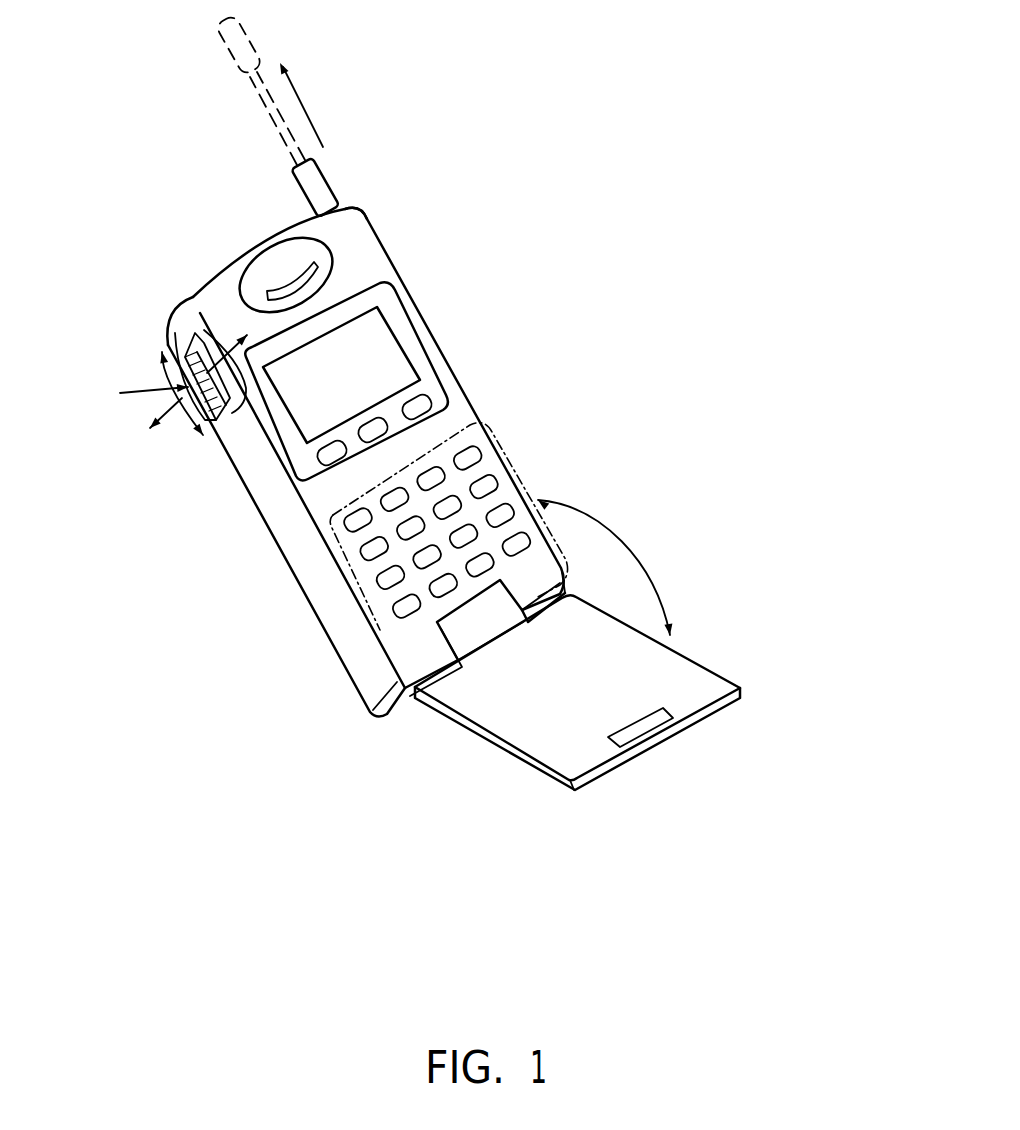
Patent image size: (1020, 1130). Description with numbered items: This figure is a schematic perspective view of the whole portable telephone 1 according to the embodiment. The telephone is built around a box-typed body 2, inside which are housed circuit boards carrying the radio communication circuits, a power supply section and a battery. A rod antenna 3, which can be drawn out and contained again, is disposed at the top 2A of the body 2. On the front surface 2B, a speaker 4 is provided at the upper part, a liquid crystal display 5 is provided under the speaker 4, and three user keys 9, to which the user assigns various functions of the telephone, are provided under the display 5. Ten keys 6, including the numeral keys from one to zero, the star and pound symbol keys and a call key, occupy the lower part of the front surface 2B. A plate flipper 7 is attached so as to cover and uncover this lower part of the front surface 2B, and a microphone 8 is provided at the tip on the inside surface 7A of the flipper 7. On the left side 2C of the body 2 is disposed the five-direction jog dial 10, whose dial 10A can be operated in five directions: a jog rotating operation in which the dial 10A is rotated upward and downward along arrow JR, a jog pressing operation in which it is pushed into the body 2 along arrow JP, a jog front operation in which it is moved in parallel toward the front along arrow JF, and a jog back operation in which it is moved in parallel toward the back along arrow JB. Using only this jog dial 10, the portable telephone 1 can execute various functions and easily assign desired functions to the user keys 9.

The portable telephone 1 is at (133, 788).
The body 2 is at (278, 576).
The top of the body 2A is at (272, 229).
The front surface of the body 2B is at (365, 242).
The left side of the body 2C is at (267, 502).
The rod antenna 3 is at (320, 180).
The speaker 4 is at (313, 278).
The display 5 is at (397, 355).
The ten keys 6 is at (516, 418).
The flipper 7 is at (465, 733).
The inside surface of the flipper 7A is at (692, 667).
The microphone 8 is at (657, 730).
The user keys 9 is at (332, 453).
The 5D jog dial 10 is at (154, 325).
The dial 10A is at (191, 311).
The arrow JR (jog rotating direction) JR is at (165, 380).
The arrow JP (jog pressing direction) JP is at (141, 402).
The arrow JB (jog back direction) JB is at (172, 415).
The arrow JF (jog front direction) JF is at (217, 440).